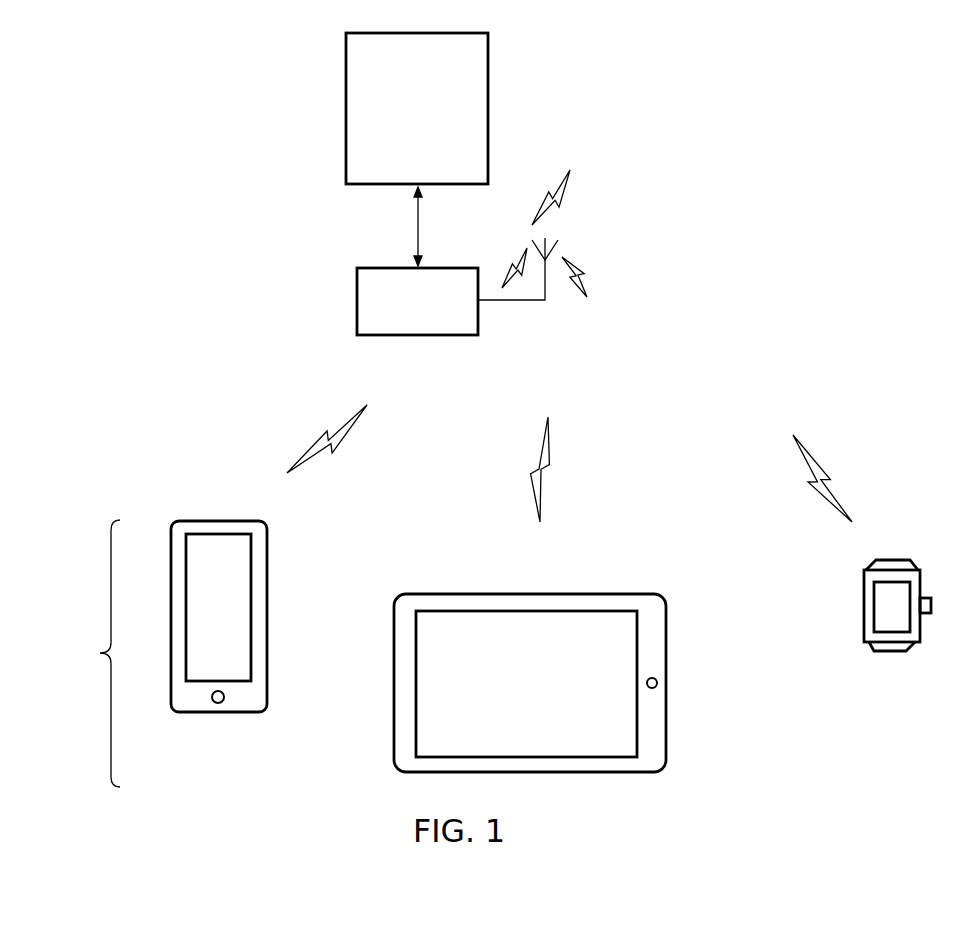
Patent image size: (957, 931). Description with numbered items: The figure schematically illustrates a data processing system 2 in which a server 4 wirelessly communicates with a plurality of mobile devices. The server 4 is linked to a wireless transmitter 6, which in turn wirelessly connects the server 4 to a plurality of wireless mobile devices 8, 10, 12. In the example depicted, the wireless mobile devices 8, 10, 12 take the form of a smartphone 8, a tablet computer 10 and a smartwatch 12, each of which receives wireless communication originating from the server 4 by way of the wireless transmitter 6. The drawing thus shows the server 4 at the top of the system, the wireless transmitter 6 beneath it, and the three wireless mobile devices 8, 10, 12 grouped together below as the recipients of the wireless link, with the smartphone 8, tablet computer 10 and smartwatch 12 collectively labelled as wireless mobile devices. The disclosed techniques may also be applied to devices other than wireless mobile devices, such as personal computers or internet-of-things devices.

The data processing system 2 is at (474, 410).
The server 4 is at (346, 110).
The wireless transmitter 6 is at (357, 300).
The smartphone 8 is at (269, 562).
The tablet computer 10 is at (627, 593).
The smartwatch 12 is at (864, 607).